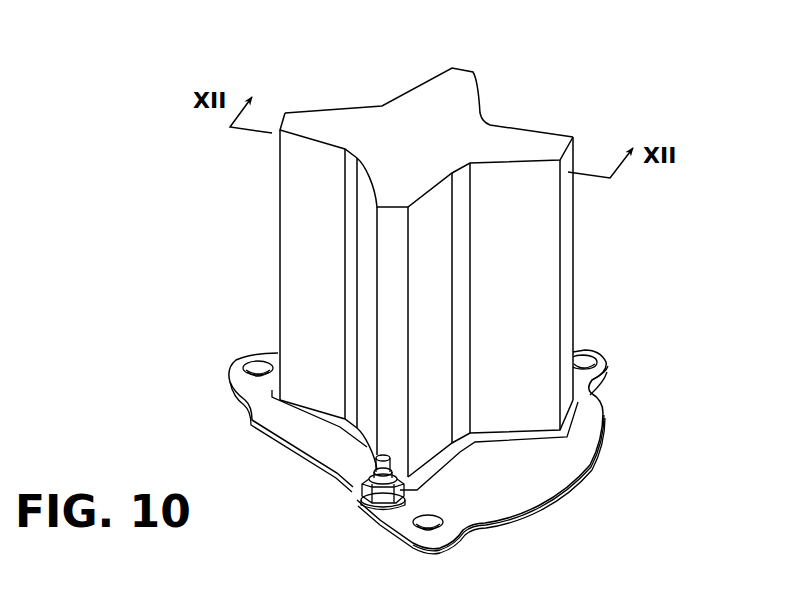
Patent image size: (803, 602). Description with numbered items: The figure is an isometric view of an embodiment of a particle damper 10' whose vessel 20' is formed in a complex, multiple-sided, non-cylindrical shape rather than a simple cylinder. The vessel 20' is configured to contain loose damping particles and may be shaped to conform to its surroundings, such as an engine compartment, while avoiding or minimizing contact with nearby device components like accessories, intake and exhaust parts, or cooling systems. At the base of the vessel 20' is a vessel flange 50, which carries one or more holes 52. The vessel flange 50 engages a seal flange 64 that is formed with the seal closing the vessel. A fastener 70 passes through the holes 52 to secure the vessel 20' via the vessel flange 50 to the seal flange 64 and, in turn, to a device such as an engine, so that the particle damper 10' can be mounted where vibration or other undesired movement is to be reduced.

The particle damper 10' is at (431, 299).
The vessel 20' is at (487, 272).
The vessel flange 50 is at (523, 477).
The hole 52 is at (250, 357).
The seal flange 64 is at (513, 528).
The fastener 70 is at (352, 492).